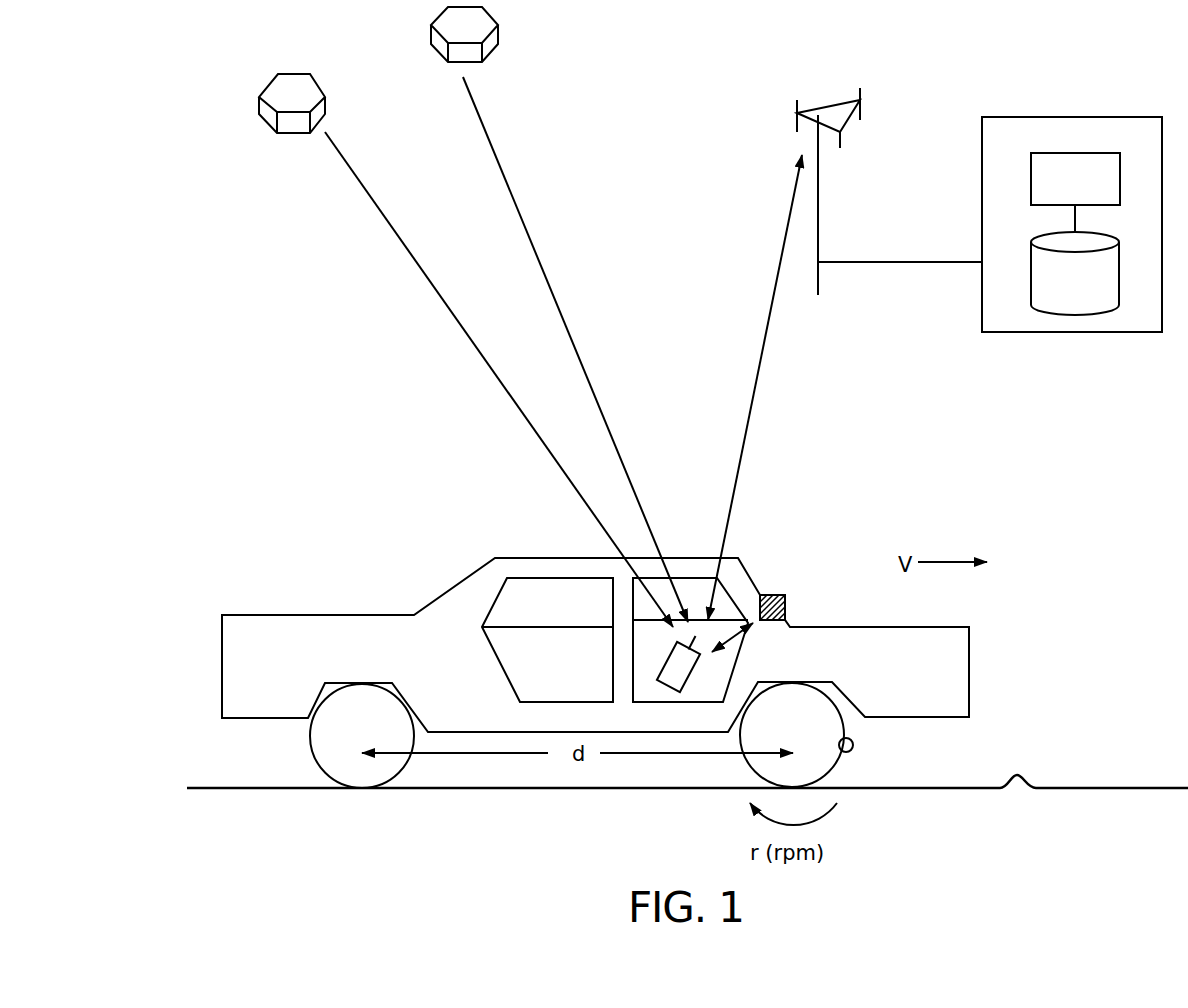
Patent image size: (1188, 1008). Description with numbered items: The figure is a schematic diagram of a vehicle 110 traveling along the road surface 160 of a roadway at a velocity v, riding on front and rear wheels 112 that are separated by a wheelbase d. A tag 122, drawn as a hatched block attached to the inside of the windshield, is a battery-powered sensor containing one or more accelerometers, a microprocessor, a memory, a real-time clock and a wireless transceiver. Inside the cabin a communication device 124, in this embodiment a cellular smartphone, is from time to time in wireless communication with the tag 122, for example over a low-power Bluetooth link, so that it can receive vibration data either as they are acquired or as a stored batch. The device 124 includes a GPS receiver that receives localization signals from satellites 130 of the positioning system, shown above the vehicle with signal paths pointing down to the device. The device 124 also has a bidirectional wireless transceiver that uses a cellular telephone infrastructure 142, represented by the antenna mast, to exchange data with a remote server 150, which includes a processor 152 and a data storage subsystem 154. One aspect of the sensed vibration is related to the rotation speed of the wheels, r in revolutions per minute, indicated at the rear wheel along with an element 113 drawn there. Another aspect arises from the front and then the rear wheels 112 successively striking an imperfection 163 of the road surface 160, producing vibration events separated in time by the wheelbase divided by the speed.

The vehicle 110 is at (318, 613).
The wheel 112 is at (397, 775).
The wheel speed sensor 113 is at (853, 748).
The tag 122 is at (772, 592).
The communication device 124 is at (697, 672).
The satellites 130 is at (259, 99).
The antenna / base station 142 is at (818, 198).
The remote server 150 is at (1073, 115).
The processor 152 is at (1078, 152).
The data storage subsystem 154 is at (1092, 240).
The road surface 160 is at (558, 788).
The road bump 163 is at (1015, 783).